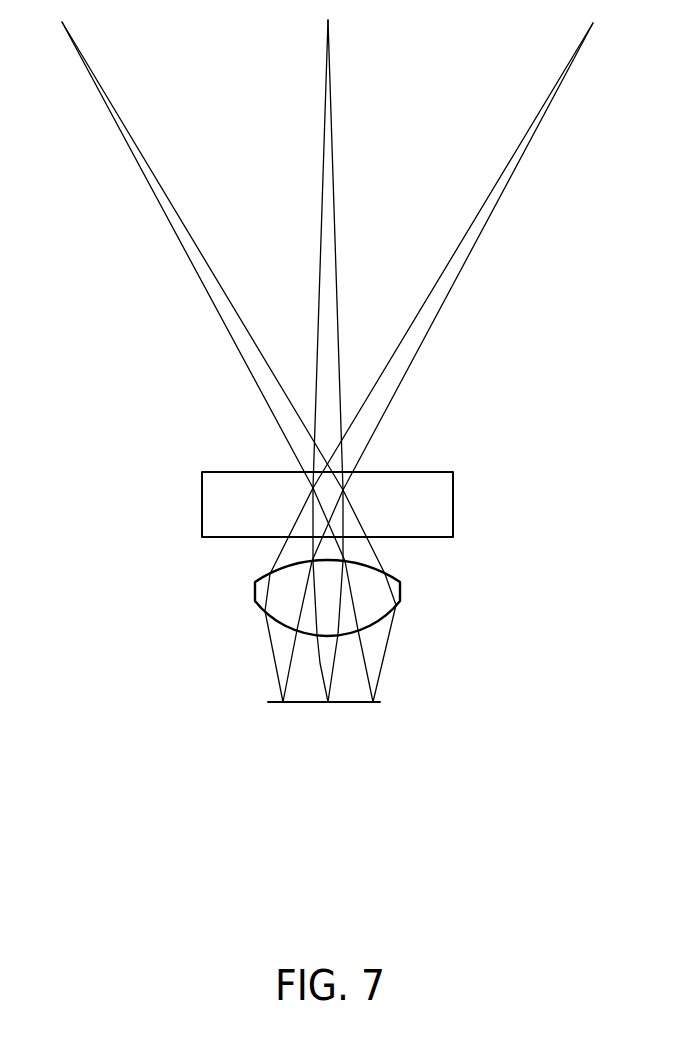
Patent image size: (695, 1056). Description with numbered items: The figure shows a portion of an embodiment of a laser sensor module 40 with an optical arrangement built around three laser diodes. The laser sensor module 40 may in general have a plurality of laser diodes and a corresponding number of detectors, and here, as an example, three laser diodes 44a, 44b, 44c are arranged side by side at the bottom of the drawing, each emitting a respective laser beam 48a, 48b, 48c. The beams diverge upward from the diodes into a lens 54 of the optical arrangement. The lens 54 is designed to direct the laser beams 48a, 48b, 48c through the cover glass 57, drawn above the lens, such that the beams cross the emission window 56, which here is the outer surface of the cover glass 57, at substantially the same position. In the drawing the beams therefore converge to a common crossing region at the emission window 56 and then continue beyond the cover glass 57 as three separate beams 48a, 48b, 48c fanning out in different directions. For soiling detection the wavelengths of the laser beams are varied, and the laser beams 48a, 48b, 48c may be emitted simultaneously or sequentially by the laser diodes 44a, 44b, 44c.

The laser sensor module 40 is at (155, 577).
The laser diode 44a is at (277, 710).
The laser diode 44b is at (327, 712).
The laser diode 44c is at (373, 712).
The laser beam 48a is at (448, 287).
The laser beam 48b is at (333, 253).
The laser beam 48c is at (204, 257).
The lens 54 is at (276, 603).
The emission window 56 is at (420, 471).
The cover glass 57 is at (443, 505).